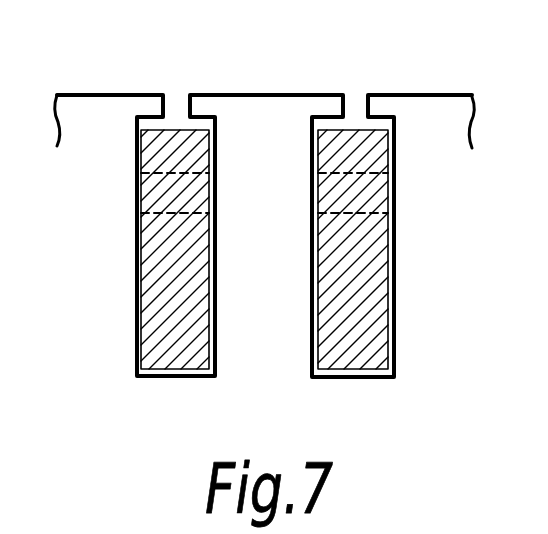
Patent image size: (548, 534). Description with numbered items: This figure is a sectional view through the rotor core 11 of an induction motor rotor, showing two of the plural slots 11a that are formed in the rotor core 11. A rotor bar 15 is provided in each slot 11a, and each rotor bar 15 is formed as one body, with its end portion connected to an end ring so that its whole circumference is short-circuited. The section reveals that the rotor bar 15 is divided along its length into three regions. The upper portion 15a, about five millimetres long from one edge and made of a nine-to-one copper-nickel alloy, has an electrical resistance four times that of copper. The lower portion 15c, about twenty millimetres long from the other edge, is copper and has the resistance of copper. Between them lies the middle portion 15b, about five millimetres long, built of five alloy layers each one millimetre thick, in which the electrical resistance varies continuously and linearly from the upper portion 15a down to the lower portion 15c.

The rotor core 11 is at (428, 93).
The slots 11a is at (168, 215).
The rotor bar 15 is at (400, 193).
The upper portion of the rotor bar 15a is at (395, 148).
The middle portion of the rotor bar 15b is at (392, 193).
The lower portion of the rotor bar 15c is at (390, 285).